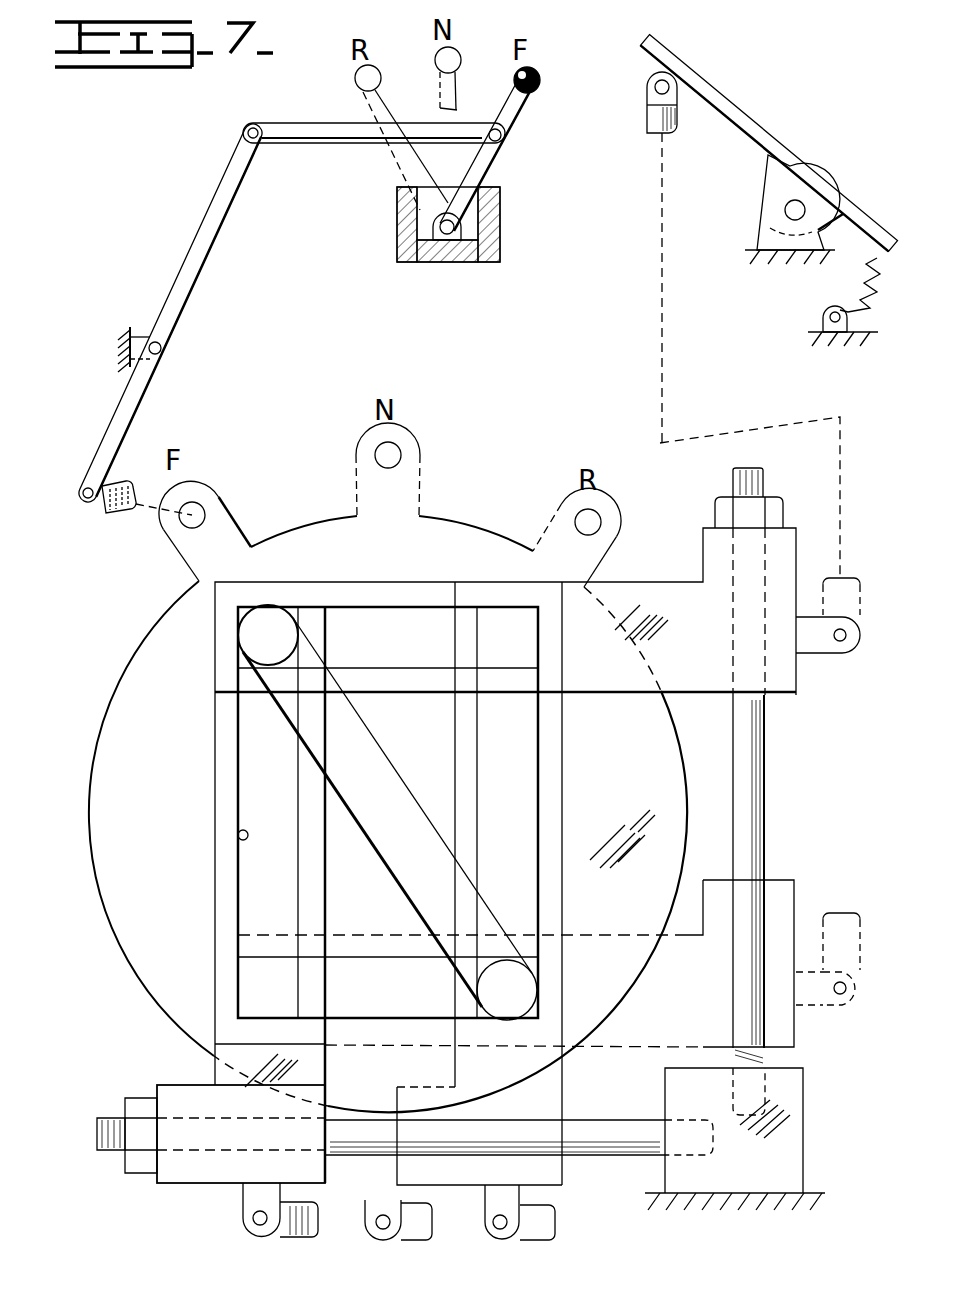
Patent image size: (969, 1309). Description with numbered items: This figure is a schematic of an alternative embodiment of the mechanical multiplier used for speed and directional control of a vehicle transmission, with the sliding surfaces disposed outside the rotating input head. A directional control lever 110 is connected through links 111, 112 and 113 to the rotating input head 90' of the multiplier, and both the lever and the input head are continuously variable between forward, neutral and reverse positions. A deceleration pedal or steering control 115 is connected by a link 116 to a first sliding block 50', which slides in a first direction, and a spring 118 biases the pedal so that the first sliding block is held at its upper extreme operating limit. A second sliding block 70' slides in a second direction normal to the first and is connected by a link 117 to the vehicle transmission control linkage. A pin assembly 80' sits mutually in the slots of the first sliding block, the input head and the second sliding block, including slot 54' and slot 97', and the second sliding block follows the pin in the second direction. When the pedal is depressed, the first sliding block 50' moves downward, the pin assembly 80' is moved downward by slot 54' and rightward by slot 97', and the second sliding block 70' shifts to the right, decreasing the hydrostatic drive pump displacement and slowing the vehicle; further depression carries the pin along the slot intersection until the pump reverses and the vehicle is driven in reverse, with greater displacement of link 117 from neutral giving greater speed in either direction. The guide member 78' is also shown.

The directional control lever 110 is at (488, 173).
The link 111 is at (345, 136).
The link 112 is at (208, 243).
The link 113 is at (118, 515).
The deceleration pedal 115 is at (798, 160).
The link 116 is at (676, 118).
The spring 118 is at (835, 297).
The first sliding block 50' is at (745, 758).
The slot 54' is at (505, 856).
The guide member 78' is at (204, 849).
The pin assembly 80' is at (283, 602).
The rotating input head 90' is at (388, 767).
The slot 97' is at (390, 819).
The second sliding block 70' is at (461, 1136).
The link 117 is at (280, 1240).